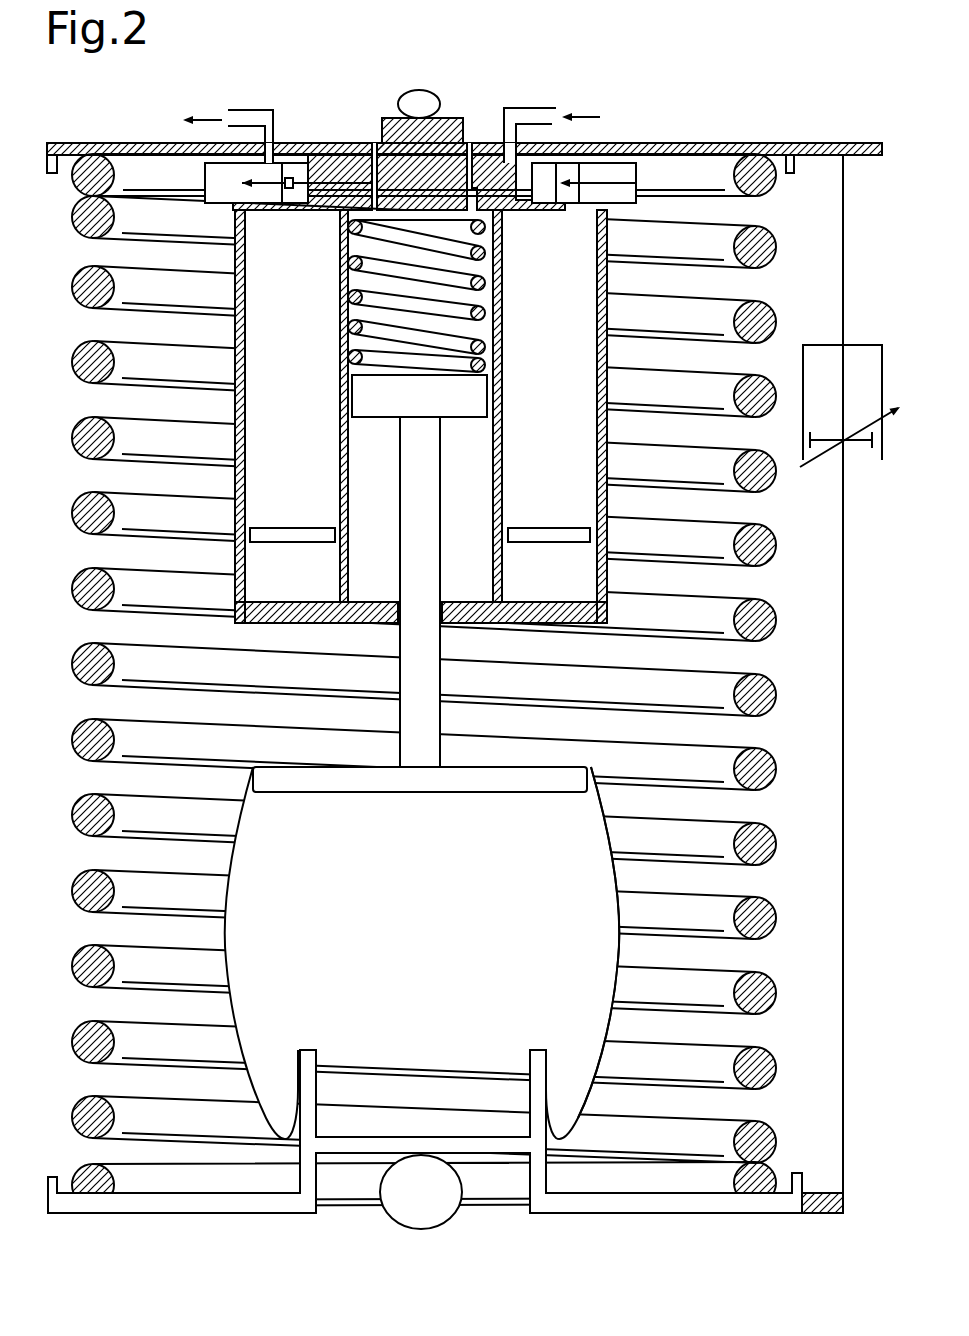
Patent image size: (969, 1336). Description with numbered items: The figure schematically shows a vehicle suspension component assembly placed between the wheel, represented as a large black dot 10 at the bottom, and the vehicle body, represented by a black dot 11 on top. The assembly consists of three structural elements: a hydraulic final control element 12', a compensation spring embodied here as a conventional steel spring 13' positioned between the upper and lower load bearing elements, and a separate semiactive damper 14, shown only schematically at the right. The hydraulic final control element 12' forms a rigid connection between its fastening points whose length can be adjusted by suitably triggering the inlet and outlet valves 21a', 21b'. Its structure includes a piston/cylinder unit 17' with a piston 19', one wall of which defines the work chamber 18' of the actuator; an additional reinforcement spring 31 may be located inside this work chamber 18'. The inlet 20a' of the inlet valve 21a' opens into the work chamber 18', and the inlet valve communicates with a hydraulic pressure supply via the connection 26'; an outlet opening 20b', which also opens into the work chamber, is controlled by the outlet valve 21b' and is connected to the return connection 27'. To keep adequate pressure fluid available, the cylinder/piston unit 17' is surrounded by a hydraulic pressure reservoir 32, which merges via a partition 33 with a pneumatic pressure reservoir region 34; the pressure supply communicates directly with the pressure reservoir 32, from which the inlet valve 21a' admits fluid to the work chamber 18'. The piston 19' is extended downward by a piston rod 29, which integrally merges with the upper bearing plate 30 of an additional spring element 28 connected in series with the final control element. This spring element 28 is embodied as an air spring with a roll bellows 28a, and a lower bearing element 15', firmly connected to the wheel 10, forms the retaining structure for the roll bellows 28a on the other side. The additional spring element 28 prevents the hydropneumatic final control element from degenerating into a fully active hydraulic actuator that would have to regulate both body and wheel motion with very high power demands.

The wheel 10 is at (427, 1230).
The vehicle body 11 is at (430, 92).
The hydraulic final control element 12' is at (480, 416).
The steel spring 13' is at (452, 680).
The semiactive damper 14 is at (818, 370).
The lower bearing element 15' is at (445, 1172).
The piston/cylinder unit 17' is at (318, 385).
The work chamber 18' is at (537, 296).
The piston 19' is at (419, 444).
The inlet 20a' is at (503, 102).
The outlet opening 20b' is at (344, 108).
The inlet valve 21a' is at (635, 197).
The outlet valve 21b' is at (262, 216).
The connection 26' is at (552, 90).
The return connection 27' is at (228, 90).
The spring element 28 is at (569, 908).
The roll bellows 28a is at (614, 955).
The piston rod 29 is at (415, 608).
The upper bearing plate 30 is at (490, 783).
The reinforcement spring 31 is at (350, 300).
The hydraulic pressure reservoir 32 is at (583, 492).
The partition 33 is at (248, 545).
The pneumatic pressure reservoir region 34 is at (240, 620).